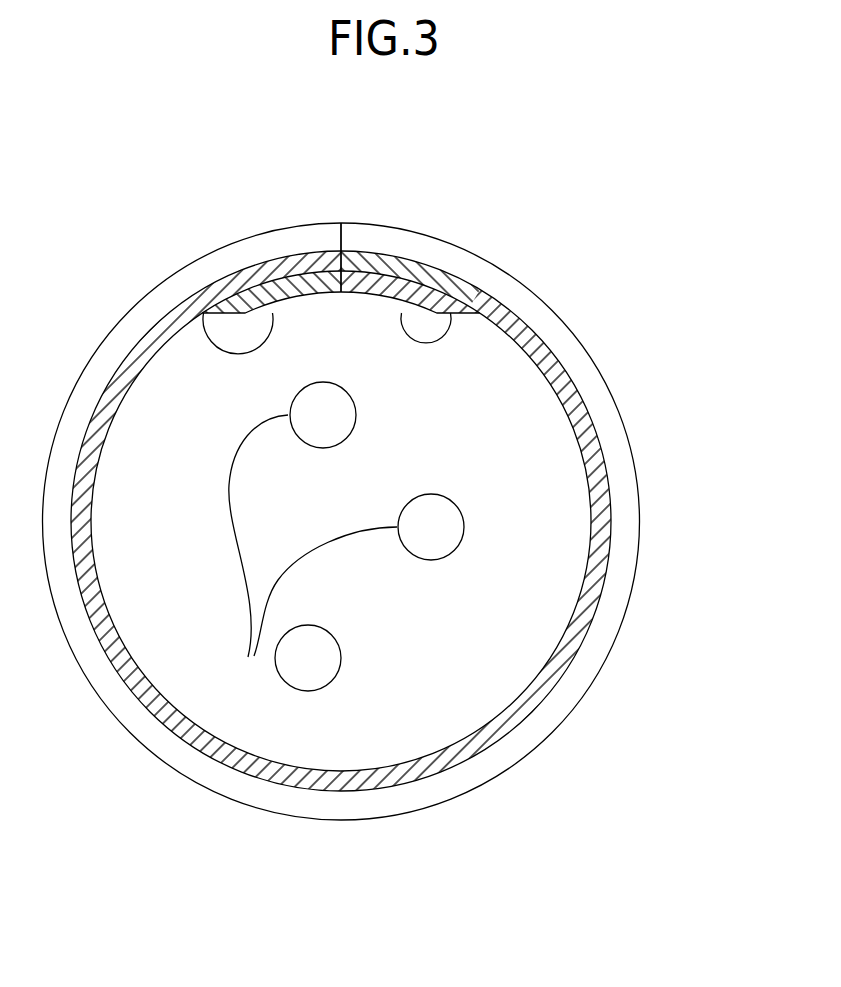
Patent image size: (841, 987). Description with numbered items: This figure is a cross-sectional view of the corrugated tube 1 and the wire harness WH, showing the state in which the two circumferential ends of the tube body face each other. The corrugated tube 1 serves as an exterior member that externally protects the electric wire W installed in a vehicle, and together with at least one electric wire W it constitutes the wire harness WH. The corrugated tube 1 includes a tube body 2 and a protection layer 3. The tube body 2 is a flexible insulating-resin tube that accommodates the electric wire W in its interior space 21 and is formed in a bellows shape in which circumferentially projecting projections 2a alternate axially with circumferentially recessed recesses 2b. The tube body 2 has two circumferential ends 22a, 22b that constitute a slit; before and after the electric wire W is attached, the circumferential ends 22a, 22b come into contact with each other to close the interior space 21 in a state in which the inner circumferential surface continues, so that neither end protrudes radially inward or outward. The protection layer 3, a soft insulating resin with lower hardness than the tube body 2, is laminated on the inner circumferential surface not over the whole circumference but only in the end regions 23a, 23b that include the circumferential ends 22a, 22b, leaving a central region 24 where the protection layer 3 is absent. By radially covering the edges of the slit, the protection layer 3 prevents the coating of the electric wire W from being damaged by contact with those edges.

The corrugated tube 1 is at (156, 220).
The tube body 2 is at (517, 272).
The projections 2a is at (252, 266).
The recesses 2b is at (308, 252).
The protection layer 3 is at (472, 322).
The interior space 21 is at (583, 505).
The circumferential end 22a is at (343, 235).
The circumferential end 22b is at (343, 235).
The end region 23a is at (204, 313).
The end region 23b is at (447, 313).
The central region 24 is at (586, 573).
The electric wire W is at (275, 658).
The wire harness WH is at (495, 174).